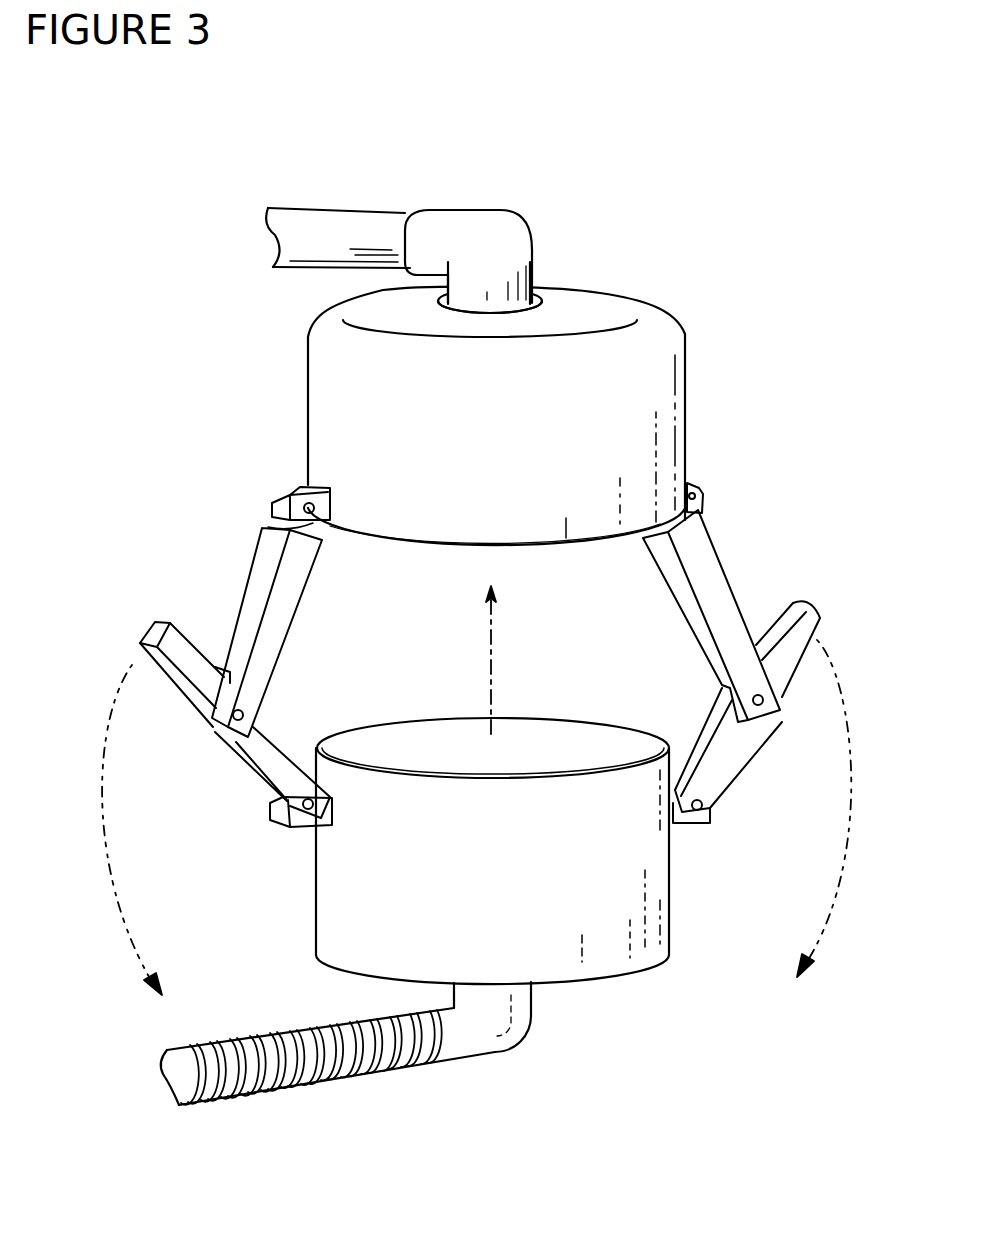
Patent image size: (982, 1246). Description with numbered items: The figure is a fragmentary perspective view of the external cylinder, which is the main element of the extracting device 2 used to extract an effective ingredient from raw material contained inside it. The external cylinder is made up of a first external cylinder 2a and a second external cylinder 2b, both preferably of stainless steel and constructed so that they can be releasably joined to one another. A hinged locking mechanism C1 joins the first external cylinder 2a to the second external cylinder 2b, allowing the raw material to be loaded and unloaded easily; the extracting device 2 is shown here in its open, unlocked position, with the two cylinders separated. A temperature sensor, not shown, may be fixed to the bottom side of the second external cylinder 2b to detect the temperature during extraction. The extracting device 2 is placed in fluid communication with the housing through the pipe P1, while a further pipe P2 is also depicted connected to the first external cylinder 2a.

The extracting device 2 is at (773, 393).
The first external cylinder 2a is at (313, 385).
The second external cylinder 2b is at (680, 937).
The hinged locking mechanism C1 is at (730, 583).
The pipe P1 is at (293, 1091).
The inlet pipe P2 is at (343, 208).